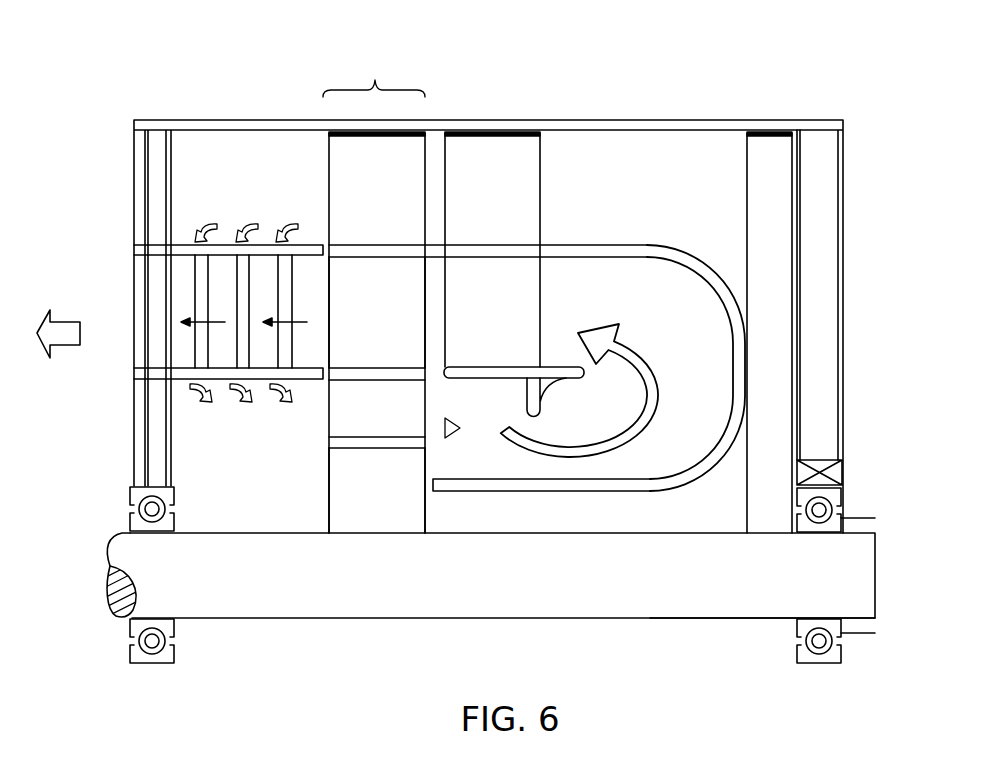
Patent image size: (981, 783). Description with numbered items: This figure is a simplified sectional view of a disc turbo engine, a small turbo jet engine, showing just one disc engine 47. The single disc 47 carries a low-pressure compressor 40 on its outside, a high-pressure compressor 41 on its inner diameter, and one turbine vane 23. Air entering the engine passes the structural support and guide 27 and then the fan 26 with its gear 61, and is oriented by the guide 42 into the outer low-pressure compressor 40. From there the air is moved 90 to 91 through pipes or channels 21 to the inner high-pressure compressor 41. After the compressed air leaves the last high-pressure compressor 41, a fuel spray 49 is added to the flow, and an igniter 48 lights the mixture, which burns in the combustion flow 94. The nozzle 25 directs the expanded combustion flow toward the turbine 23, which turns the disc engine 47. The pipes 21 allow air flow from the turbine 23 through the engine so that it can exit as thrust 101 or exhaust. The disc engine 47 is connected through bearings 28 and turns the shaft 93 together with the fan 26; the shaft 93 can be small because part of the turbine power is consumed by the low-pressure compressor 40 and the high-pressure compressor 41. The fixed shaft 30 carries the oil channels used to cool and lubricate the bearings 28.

The pipes 21 is at (195, 292).
The turbine vane 23 is at (360, 288).
The nozzle 25 is at (532, 288).
The fan 26 is at (748, 210).
The structural support and guide 27 is at (799, 263).
The bearings 28 is at (130, 515).
The fixed shaft 30 is at (200, 620).
The low-pressure compressor 40 is at (340, 137).
The high-pressure compressor 41 is at (357, 450).
The guide fan 42 is at (500, 137).
The disc engine 47 is at (375, 80).
The igniter 48 is at (510, 478).
The fuel spray 49 is at (455, 431).
The gear 61 is at (797, 470).
The air flow 90 is at (193, 232).
The air flow 91 is at (200, 398).
The shaft 93 is at (683, 620).
The combustion flow 94 is at (642, 357).
The thrust 101 is at (60, 347).